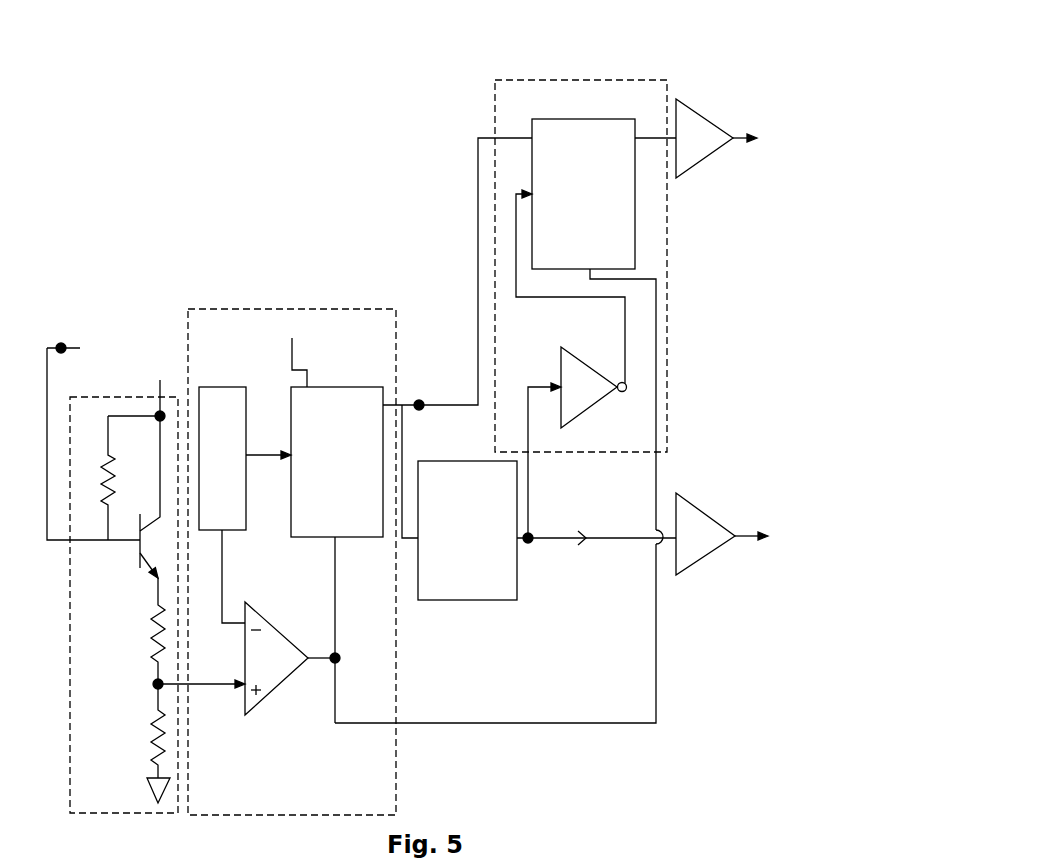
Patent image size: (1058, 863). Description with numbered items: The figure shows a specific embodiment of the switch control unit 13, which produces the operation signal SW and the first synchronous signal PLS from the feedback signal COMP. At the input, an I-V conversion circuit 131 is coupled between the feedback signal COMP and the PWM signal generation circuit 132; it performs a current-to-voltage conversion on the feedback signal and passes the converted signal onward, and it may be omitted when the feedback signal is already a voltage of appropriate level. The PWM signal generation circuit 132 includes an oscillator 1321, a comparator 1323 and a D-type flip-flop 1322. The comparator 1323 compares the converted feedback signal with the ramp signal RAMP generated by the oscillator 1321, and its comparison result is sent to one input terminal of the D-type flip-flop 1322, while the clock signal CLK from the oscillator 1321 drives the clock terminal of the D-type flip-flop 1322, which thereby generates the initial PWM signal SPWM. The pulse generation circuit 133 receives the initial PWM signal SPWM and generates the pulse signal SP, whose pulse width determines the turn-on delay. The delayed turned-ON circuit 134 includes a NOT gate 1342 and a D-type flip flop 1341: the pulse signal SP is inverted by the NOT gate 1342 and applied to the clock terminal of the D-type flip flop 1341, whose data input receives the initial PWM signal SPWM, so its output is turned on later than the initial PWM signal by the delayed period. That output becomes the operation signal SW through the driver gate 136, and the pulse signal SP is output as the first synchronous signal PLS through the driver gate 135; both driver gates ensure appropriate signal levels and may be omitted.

The switch control unit 13 is at (690, 49).
The current-to-voltage (I-V) conversion circuit 131 is at (112, 805).
The PWM signal generation circuit 132 is at (231, 805).
The oscillator 1321 is at (243, 479).
The D-type flip-flop 1322 is at (357, 498).
The comparator 1323 is at (278, 628).
The pulse generation circuit 133 is at (483, 580).
The delayed turned-ON circuit 134 is at (496, 95).
The D-type flip flop 1341 is at (603, 243).
The NOT gate 1342 is at (612, 400).
The driver gate 135 is at (712, 553).
The driver gate 136 is at (712, 160).